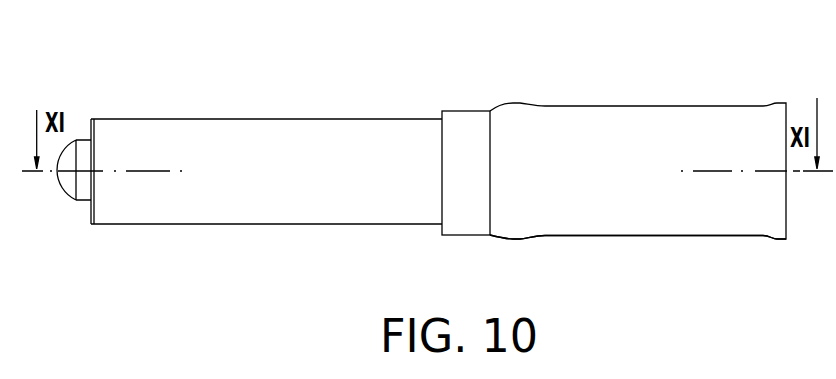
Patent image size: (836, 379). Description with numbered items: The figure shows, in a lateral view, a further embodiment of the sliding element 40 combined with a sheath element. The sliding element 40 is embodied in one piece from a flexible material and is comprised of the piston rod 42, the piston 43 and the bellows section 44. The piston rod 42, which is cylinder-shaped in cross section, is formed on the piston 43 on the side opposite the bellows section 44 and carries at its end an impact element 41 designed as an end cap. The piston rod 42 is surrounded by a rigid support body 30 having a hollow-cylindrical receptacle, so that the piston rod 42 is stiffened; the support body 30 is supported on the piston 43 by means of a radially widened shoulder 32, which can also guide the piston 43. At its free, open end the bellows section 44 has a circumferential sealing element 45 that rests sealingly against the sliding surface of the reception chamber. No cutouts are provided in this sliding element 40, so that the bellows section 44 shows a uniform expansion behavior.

The support body 30 is at (286, 112).
The shoulder 32 is at (463, 120).
The sliding element 40 is at (625, 101).
The impact element 41 is at (63, 192).
The piston rod 42 is at (82, 200).
The piston 43 is at (512, 227).
The bellows section 44 is at (630, 220).
The sealing element 45 is at (783, 240).